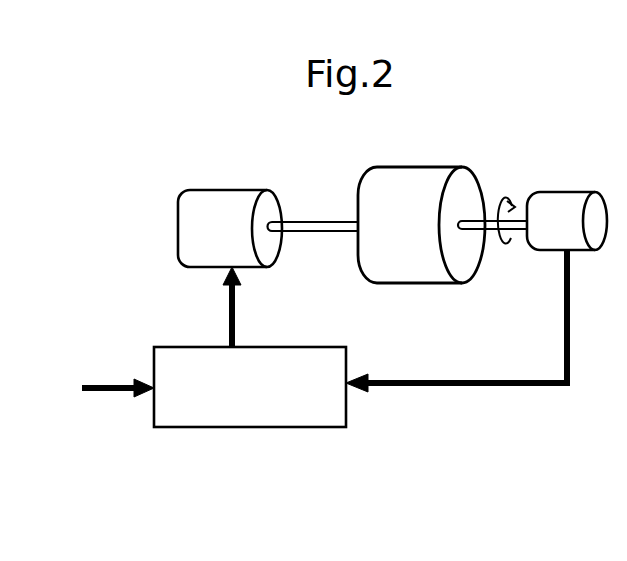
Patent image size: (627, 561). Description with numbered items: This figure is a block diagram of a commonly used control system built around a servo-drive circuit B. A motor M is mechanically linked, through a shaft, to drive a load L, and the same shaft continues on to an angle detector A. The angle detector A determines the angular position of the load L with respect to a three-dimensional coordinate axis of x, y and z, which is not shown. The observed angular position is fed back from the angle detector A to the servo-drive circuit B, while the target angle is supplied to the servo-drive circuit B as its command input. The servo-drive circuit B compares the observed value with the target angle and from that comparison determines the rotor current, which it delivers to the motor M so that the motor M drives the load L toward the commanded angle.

The motor M is at (229, 188).
The load L is at (406, 167).
The angle detector A is at (574, 192).
The servo-drive circuit B is at (273, 428).